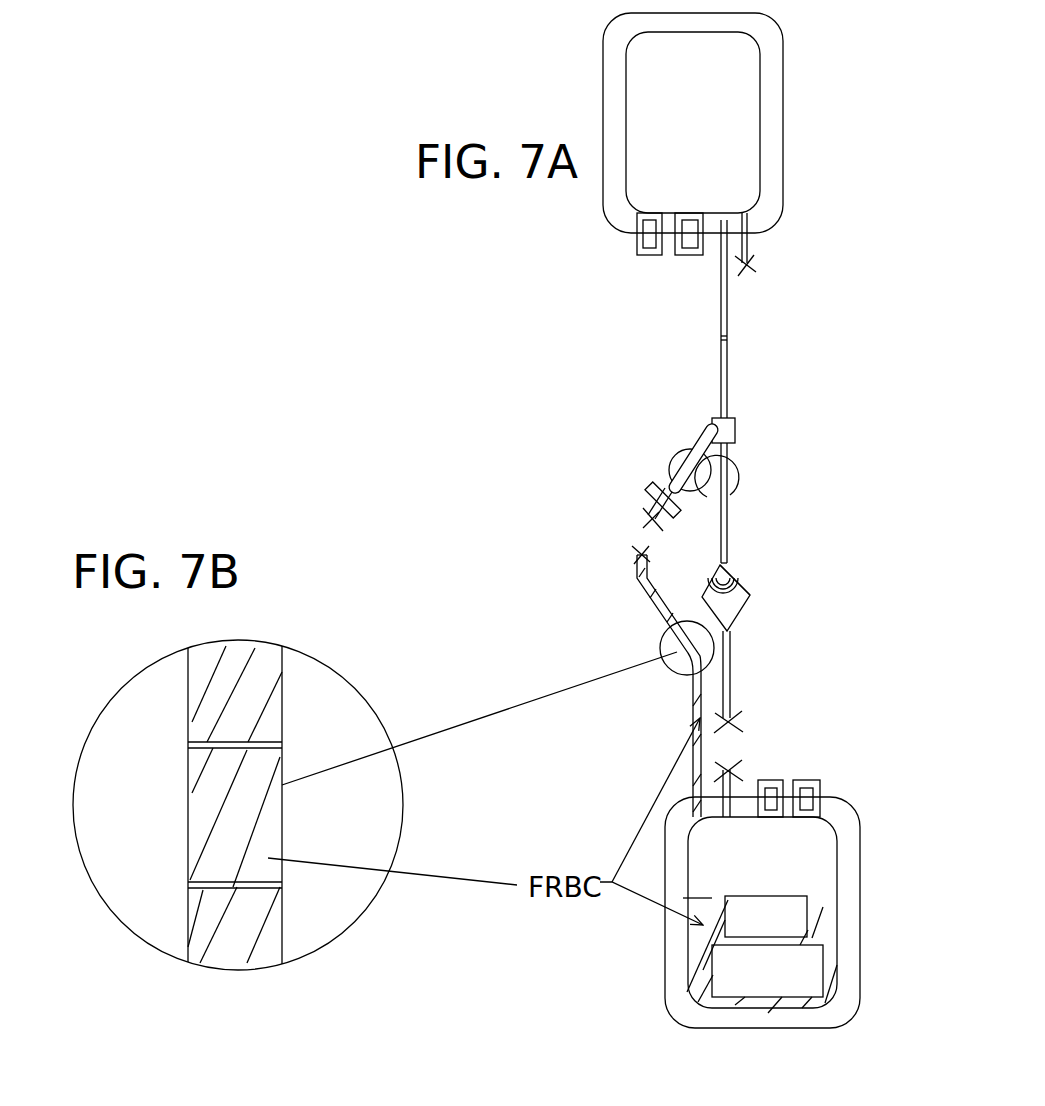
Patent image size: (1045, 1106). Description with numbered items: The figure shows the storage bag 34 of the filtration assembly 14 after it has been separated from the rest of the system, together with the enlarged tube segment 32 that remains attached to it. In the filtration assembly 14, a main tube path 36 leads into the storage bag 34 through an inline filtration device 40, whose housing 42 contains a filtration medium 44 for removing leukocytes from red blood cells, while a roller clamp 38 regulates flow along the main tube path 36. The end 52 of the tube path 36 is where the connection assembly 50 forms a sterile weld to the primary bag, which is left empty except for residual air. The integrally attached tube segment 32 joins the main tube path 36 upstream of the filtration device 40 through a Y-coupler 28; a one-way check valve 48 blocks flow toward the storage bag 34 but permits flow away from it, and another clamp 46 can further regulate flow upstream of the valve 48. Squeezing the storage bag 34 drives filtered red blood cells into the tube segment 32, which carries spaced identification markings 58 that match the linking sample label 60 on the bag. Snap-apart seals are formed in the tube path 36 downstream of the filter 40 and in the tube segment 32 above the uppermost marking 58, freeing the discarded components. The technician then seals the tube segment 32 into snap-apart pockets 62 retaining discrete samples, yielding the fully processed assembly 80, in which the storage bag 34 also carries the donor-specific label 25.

In FIG. 7A, the filtration assembly 14 is at (524, 356).
In FIG. 7A, the donor-specific label 25 is at (833, 954).
In FIG. 7A, the Y-coupler 28 is at (790, 406).
In FIG. 7A, the tube segment 32 is at (606, 681).
In FIG. 7B, the tube segment 32 is at (309, 788).
In FIG. 7A, the storage bag 34 is at (781, 897).
In FIG. 7A, the main tube path 36 is at (817, 498).
In FIG. 7A, the clamp 38 is at (787, 480).
In FIG. 7A, the inline filtration device 40 is at (803, 598).
In FIG. 7A, the housing 42 is at (791, 567).
In FIG. 7A, the filtration medium 44 is at (798, 545).
In FIG. 7A, the clamp 46 is at (621, 459).
In FIG. 7A, the one-way check valve 48 is at (574, 506).
In FIG. 7A, the connection assembly 50 is at (767, 178).
In FIG. 7A, the end of the tube path 52 is at (647, 319).
In FIG. 7A, the identification markings 58 is at (653, 963).
In FIG. 7B, the identification markings 58 is at (379, 813).
In FIG. 7A, the label 60 is at (839, 899).
In FIG. 7B, the sealed snap-apart pockets 62 is at (161, 806).
In FIG. 7A, the fully processed assembly 80 is at (814, 724).